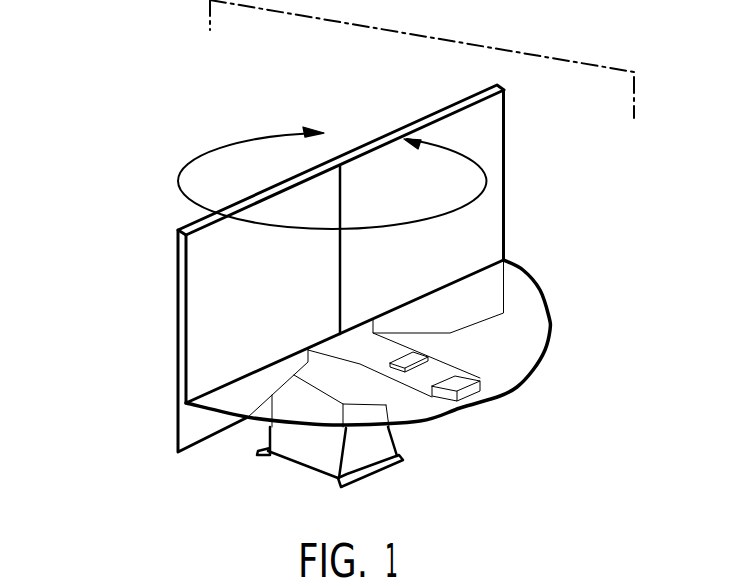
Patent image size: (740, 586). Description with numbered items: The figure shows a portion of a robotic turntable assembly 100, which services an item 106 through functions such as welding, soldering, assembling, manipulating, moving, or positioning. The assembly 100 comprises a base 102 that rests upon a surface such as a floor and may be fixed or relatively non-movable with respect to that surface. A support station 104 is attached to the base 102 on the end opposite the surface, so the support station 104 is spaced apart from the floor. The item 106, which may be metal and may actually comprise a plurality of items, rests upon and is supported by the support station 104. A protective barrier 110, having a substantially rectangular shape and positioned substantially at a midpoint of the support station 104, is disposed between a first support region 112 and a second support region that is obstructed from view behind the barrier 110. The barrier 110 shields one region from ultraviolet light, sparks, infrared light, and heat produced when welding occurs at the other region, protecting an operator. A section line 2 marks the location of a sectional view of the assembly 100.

The robotic turntable assembly 100 is at (122, 106).
The base 102 is at (305, 443).
The support station 104 is at (423, 375).
The item 106 is at (453, 381).
The protective barrier 110 is at (482, 238).
The first support region 112 is at (433, 365).
The section line 2- 2 is at (210, 46).